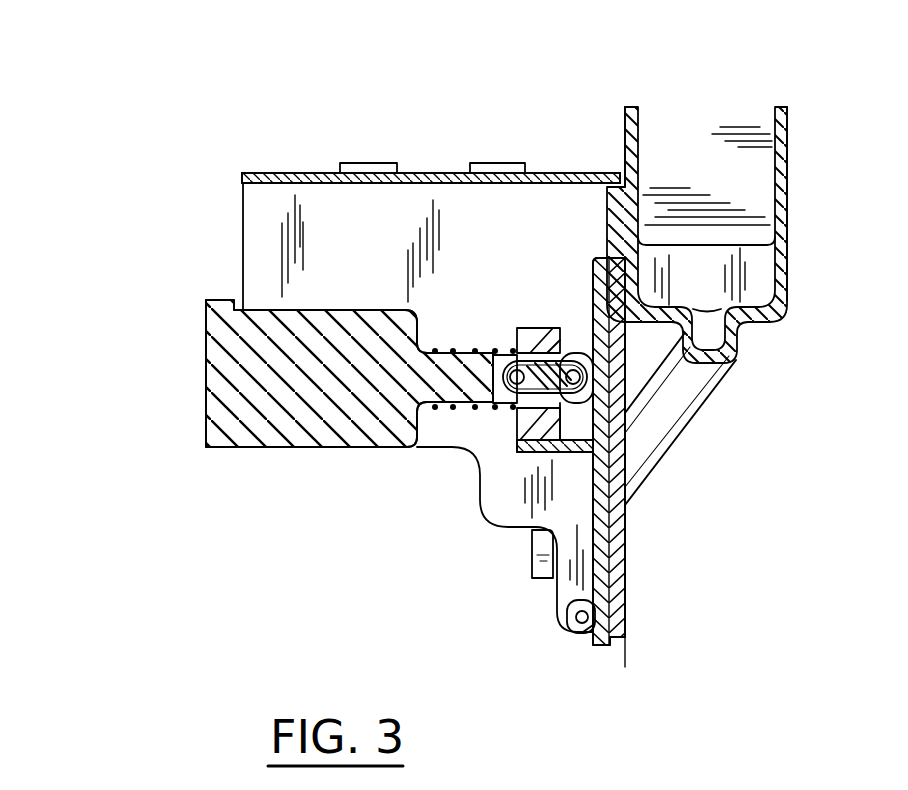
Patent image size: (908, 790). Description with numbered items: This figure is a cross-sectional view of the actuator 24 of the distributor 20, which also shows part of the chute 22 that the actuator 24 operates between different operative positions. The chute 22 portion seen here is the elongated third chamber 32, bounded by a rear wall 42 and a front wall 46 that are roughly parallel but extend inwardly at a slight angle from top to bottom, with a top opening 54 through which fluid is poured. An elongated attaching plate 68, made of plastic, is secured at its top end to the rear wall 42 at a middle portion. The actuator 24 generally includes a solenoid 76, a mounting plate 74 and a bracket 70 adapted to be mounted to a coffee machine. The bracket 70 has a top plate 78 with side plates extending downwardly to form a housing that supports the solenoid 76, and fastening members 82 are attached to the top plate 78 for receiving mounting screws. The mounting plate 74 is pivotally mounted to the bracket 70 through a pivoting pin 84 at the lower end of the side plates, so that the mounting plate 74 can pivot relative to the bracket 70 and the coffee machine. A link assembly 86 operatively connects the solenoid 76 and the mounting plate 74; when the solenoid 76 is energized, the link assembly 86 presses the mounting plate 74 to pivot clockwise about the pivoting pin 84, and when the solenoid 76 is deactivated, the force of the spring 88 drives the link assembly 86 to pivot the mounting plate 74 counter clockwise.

The distributor 20 is at (563, 163).
The chute 22 is at (788, 229).
The actuator 24 is at (243, 249).
The third chamber 32 is at (790, 260).
The rear wall 42 is at (624, 134).
The front wall 46 is at (788, 137).
The top opening 54 is at (703, 107).
The attaching plate 68 is at (618, 538).
The bracket 70 is at (275, 173).
The mounting plate 74 is at (600, 600).
The solenoid 76 is at (296, 447).
The top plate 78 is at (432, 173).
The fastening members 82 is at (370, 163).
The pivoting pin 84 is at (583, 628).
The link assembly 86 is at (566, 358).
The spring 88 is at (452, 350).